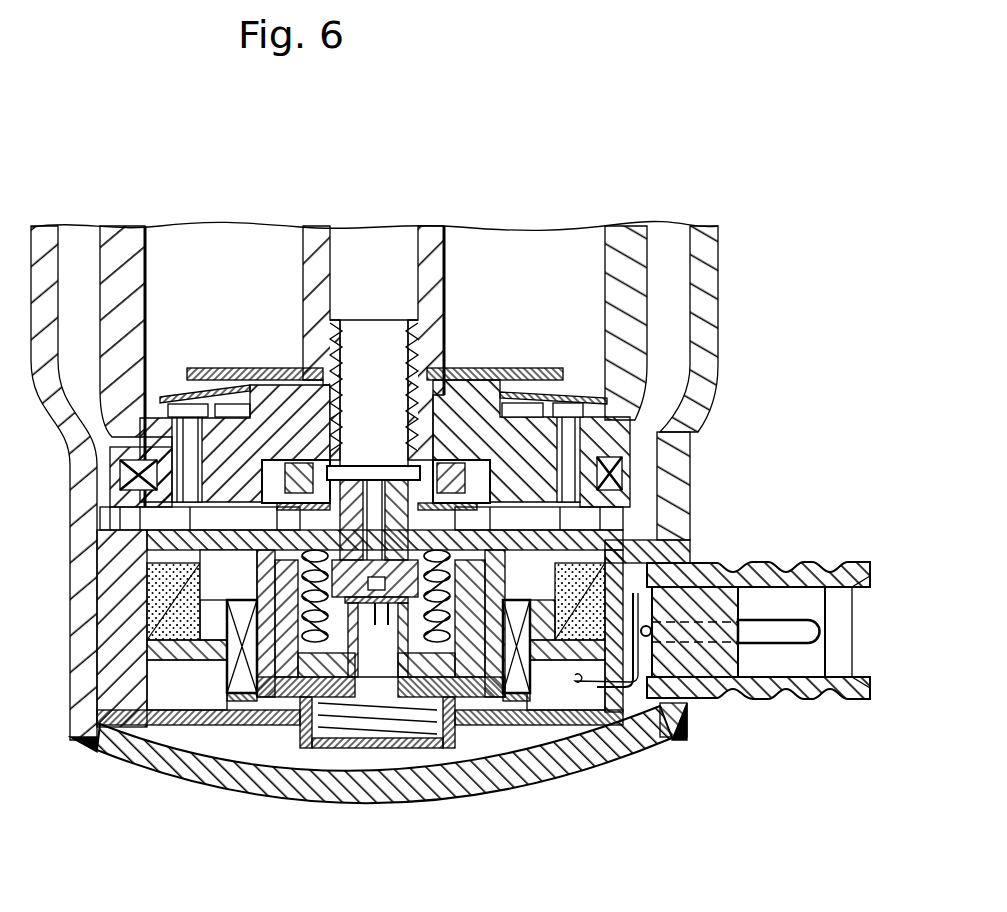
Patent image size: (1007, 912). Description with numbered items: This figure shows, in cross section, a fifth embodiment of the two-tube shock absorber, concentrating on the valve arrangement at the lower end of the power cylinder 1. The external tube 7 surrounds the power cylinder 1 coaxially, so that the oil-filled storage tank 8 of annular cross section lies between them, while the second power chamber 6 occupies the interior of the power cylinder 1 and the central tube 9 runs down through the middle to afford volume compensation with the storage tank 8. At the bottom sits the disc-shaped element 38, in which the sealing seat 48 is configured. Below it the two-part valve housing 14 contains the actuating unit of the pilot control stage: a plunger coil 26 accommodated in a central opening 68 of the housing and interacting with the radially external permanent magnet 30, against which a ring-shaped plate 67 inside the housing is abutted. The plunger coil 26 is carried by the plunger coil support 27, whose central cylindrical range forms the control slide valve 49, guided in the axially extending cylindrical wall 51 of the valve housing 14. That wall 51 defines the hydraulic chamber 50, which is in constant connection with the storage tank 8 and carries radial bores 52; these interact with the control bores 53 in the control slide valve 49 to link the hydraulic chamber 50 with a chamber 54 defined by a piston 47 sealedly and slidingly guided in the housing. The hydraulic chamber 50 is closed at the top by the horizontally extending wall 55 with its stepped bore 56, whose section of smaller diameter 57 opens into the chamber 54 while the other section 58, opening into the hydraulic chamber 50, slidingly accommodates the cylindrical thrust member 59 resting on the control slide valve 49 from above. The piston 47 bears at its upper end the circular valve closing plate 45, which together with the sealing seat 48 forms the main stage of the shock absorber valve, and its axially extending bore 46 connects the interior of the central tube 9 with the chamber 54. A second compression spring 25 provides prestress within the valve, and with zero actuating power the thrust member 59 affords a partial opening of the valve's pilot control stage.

The power cylinder 1 is at (613, 245).
The second power chamber 6 is at (181, 248).
The external tube 7 is at (702, 240).
The storage tank 8 is at (78, 245).
The central tube 9 is at (428, 245).
The valve housing 14 is at (622, 538).
The second compression spring 25 is at (307, 748).
The plunger coil 26 is at (226, 672).
The plunger coil support 27 is at (265, 700).
The permanent magnet 30 is at (165, 597).
The disc-shaped element 38 is at (640, 436).
The valve closing plate 45 is at (435, 470).
The axially extending bore 46 is at (373, 568).
The piston 47 is at (473, 697).
The sealing seat 48 is at (437, 490).
The control slide valve 49 is at (383, 672).
The hydraulic chamber 50 is at (390, 680).
The cylindrical wall 51 is at (100, 631).
The radial bores 52 is at (308, 700).
The control bores 53 is at (410, 700).
The chamber 54 is at (292, 700).
The horizontally extending wall 55 is at (325, 515).
The stepped bore 56 is at (457, 522).
The section of smaller diameter 57 is at (380, 568).
The section 58 is at (262, 573).
The thrust member 59 is at (483, 583).
The ring-shaped plate 67 is at (585, 690).
The central opening 68 is at (545, 670).